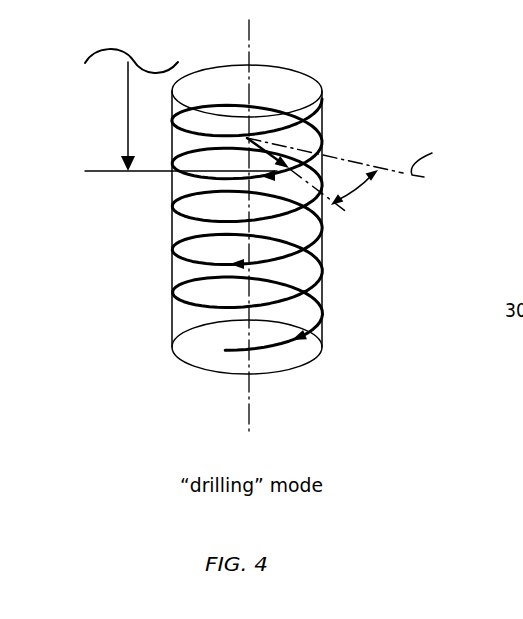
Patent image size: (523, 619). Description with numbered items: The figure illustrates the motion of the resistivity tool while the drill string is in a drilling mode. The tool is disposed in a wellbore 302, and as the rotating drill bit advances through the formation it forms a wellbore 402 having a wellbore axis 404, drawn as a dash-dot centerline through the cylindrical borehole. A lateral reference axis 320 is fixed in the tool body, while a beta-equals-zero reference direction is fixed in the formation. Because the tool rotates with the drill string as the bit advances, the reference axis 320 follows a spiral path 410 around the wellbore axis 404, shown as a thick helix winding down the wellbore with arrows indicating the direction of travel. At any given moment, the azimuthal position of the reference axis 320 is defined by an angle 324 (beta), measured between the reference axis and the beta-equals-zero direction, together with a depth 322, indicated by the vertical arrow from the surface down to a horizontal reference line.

The wellbore 302 is at (172, 327).
The lateral reference axis 320 is at (245, 150).
The depth 322 is at (127, 118).
The angle β 324 is at (382, 172).
The wellbore 402 is at (323, 103).
The wellbore axis 404 is at (250, 50).
The helical path 410 is at (323, 253).